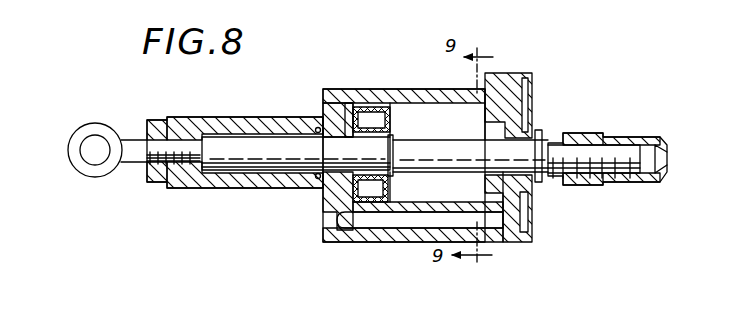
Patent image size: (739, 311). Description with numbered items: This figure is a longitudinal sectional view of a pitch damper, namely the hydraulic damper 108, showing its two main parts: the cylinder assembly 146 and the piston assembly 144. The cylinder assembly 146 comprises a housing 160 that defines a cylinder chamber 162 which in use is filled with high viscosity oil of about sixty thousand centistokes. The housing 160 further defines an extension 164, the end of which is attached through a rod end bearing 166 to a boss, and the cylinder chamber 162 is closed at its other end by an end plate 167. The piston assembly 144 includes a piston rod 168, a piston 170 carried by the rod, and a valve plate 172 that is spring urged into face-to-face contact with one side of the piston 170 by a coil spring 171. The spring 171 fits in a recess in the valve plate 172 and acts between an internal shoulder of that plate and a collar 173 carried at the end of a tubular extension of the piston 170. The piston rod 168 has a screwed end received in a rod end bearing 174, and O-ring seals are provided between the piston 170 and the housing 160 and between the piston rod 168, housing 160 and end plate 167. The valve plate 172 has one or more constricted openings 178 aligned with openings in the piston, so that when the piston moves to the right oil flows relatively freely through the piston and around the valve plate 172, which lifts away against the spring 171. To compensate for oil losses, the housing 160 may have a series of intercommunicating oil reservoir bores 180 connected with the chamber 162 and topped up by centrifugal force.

The hydraulic damper 108 is at (350, 68).
The piston assembly 144 is at (440, 128).
The cylinder assembly 146 is at (182, 105).
The housing 160 is at (290, 127).
The cylinder chamber 162 is at (405, 100).
The extension 164 is at (232, 136).
The rod end bearing 166 is at (93, 123).
The end plate 167 is at (510, 100).
The piston rod 168 is at (413, 160).
The piston 170 is at (383, 113).
The coil spring 171 is at (365, 133).
The valve plate 172 is at (343, 95).
The collar 173 is at (325, 112).
The rod end bearing 174 is at (647, 140).
The constricted openings 178 is at (352, 200).
The oil reservoir bores 180 is at (372, 222).